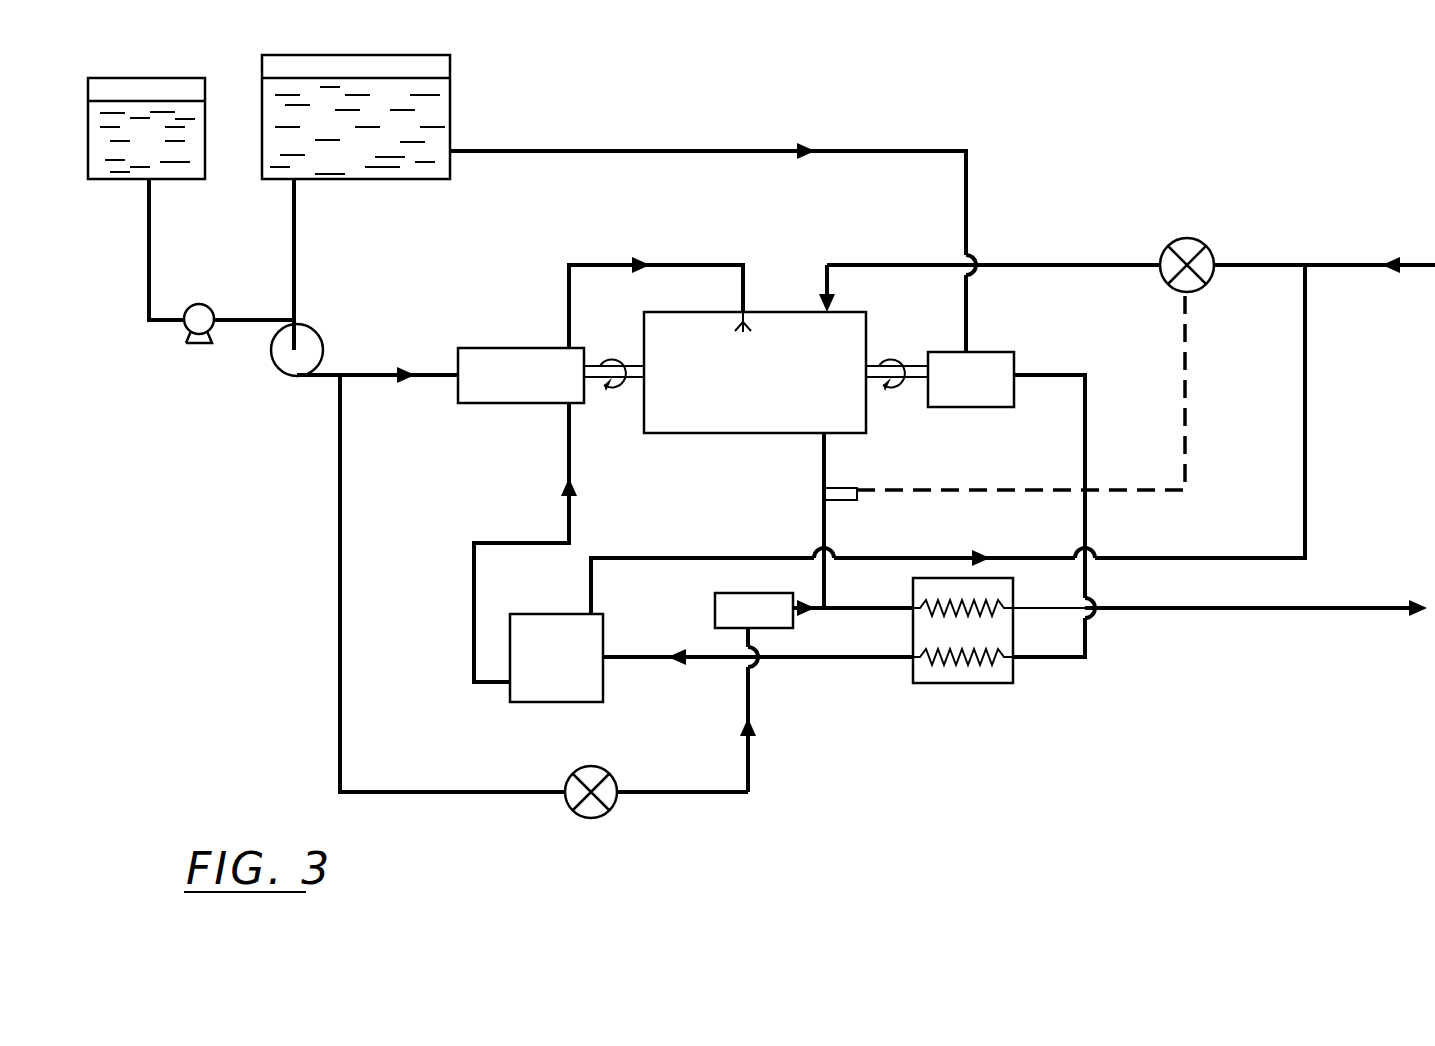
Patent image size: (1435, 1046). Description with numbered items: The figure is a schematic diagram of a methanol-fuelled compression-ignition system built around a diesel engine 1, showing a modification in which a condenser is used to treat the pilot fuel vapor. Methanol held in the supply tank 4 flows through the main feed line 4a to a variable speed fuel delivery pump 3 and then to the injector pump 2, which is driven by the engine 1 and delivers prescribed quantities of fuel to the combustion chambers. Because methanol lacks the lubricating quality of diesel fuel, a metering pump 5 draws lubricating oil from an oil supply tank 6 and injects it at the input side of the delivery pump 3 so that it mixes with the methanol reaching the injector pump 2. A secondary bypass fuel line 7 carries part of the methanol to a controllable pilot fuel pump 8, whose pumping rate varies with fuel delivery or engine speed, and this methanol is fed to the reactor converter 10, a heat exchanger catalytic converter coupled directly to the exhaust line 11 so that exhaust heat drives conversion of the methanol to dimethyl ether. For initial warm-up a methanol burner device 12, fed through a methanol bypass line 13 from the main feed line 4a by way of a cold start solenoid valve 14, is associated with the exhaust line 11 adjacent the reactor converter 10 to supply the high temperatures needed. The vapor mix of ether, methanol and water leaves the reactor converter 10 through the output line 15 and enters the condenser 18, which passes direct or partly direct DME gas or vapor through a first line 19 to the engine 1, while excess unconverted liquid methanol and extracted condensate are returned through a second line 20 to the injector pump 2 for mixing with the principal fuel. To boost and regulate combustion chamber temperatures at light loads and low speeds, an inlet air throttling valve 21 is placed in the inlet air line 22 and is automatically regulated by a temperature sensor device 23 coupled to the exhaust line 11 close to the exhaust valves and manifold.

The diesel engine 1 is at (793, 322).
The injector pump 2 is at (507, 363).
The fuel delivery pump 3 is at (318, 343).
The supply tank 4 is at (452, 100).
The main feed line 4a is at (297, 260).
The metering pump 5 is at (212, 305).
The oil supply tank 6 is at (113, 180).
The bypass fuel line 7 is at (729, 149).
The pilot fuel pump 8 is at (1010, 377).
The reactor converter 10 is at (1010, 680).
The exhaust line 11 is at (1288, 613).
The methanol burner device 12 is at (715, 608).
The methanol bypass line 13 is at (333, 697).
The cold start solenoid valve 14 is at (611, 810).
The output line 15 is at (806, 660).
The condenser 18 is at (600, 695).
The first line 19 is at (1307, 497).
The second line 20 is at (508, 540).
The inlet air throttling valve 21 is at (1208, 285).
The inlet air line 22 is at (1372, 268).
The temperature sensor device 23 is at (857, 497).